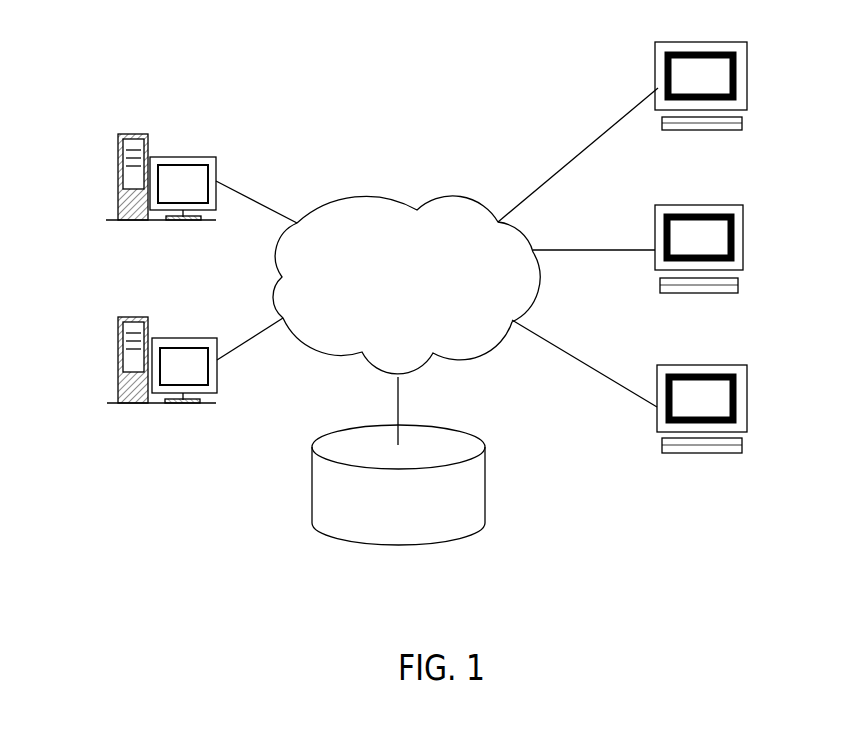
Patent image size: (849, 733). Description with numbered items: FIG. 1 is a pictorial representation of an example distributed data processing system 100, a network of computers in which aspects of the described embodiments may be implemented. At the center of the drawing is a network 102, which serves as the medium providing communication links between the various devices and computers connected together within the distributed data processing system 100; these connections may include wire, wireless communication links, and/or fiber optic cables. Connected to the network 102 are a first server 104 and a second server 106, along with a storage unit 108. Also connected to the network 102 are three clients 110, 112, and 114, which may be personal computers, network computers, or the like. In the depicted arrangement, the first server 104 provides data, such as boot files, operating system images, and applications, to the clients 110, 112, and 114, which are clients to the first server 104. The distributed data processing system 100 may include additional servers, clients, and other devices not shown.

The distributed data processing system 100 is at (488, 108).
The network 102 is at (380, 194).
The first server 104 is at (118, 180).
The second server 106 is at (118, 360).
The storage unit 108 is at (312, 485).
The client 110 is at (747, 85).
The client 112 is at (743, 250).
The client 114 is at (747, 408).